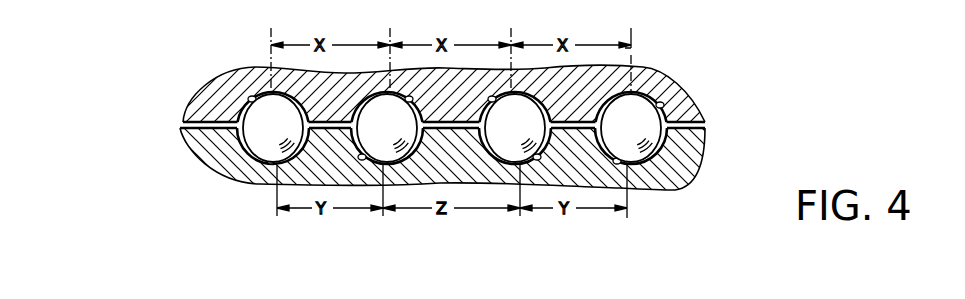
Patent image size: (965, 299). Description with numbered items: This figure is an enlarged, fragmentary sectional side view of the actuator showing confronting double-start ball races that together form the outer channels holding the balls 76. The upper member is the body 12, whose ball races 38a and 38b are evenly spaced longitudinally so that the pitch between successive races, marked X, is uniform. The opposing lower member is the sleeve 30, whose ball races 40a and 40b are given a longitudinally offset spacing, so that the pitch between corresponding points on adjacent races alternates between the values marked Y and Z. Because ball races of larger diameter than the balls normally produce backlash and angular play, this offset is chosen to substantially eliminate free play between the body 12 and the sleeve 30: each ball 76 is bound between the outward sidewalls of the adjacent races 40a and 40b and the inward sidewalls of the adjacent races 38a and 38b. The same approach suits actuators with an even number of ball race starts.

The body 12 is at (585, 80).
The sleeve 30 is at (587, 167).
The ball race 38a is at (412, 96).
The ball race 38b is at (249, 96).
The ball race 40a is at (360, 160).
The ball race 40b is at (272, 164).
The ball 76 is at (276, 138).